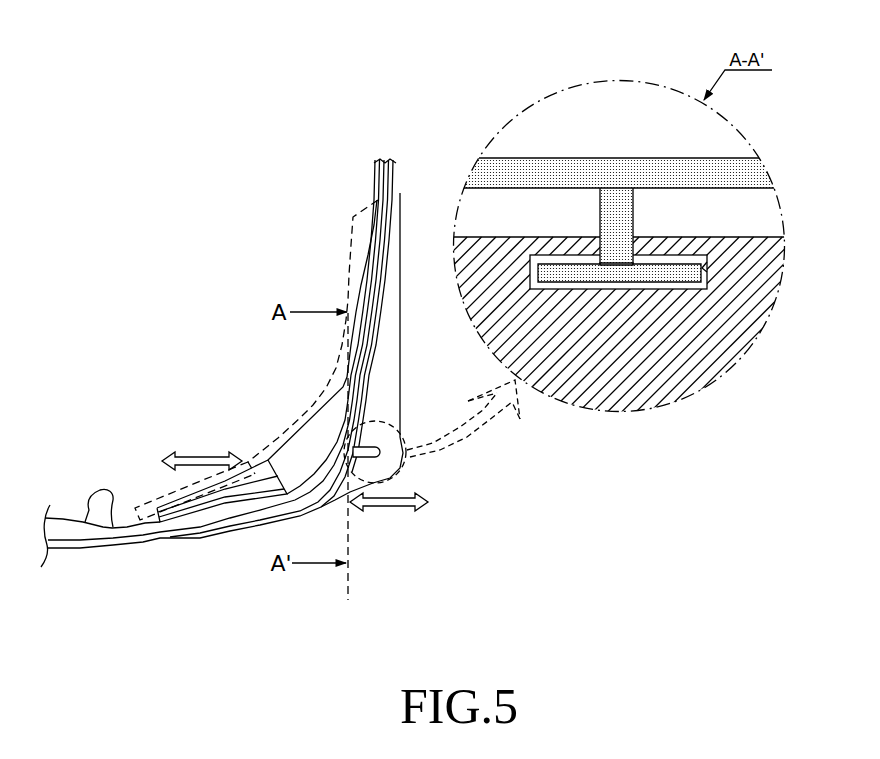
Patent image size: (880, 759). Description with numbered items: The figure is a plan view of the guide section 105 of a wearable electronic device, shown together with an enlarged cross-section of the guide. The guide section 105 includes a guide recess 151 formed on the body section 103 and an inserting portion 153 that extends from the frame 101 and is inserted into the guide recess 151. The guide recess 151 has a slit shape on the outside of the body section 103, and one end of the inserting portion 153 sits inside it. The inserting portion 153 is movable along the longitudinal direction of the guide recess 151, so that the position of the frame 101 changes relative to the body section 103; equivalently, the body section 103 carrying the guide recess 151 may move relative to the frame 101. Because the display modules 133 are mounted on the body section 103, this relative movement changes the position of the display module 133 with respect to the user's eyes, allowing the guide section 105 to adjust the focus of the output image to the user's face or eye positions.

The frame 101 is at (606, 158).
The body section 103 is at (578, 324).
The guide section 105 is at (699, 194).
The display module 133 is at (204, 531).
The guide recess 151 is at (735, 233).
The inserting portion 153 is at (637, 210).